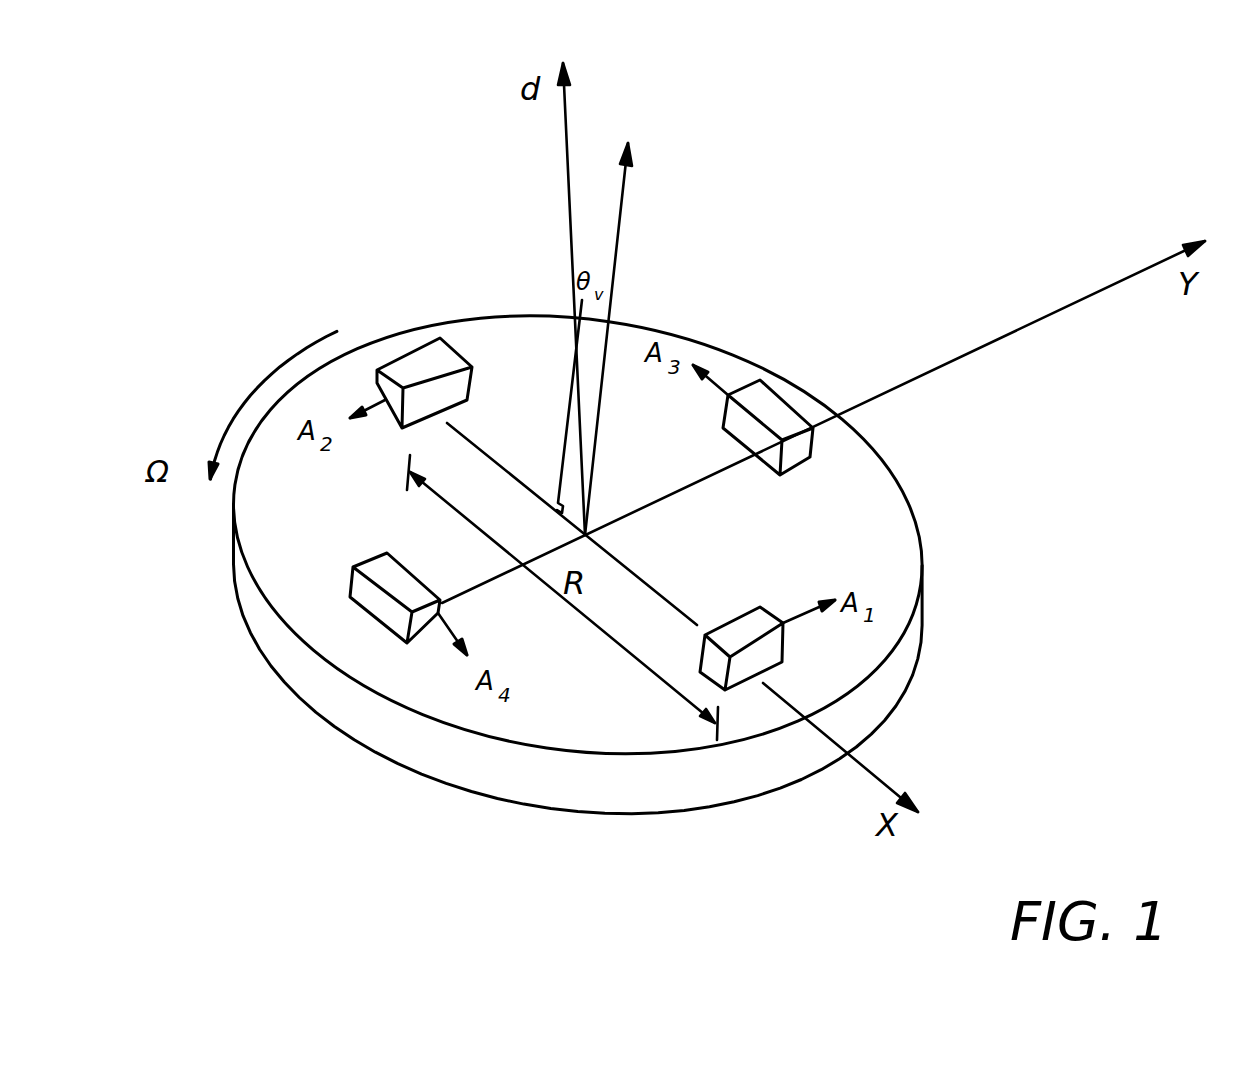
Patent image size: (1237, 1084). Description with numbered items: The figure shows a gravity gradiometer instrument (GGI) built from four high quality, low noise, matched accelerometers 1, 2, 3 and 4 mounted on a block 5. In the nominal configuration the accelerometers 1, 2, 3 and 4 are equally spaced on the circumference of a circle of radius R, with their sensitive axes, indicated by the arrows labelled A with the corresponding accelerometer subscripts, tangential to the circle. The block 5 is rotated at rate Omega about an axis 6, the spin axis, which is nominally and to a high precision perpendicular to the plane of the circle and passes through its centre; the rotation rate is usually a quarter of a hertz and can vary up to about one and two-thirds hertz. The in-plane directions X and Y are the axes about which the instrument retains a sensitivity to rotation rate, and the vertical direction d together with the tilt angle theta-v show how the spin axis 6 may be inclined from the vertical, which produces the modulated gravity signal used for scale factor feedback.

The accelerometer 1 is at (732, 634).
The accelerometer 2 is at (400, 358).
The accelerometer 3 is at (787, 402).
The accelerometer 4 is at (372, 560).
The block 5 is at (462, 773).
The axis 6 is at (608, 336).